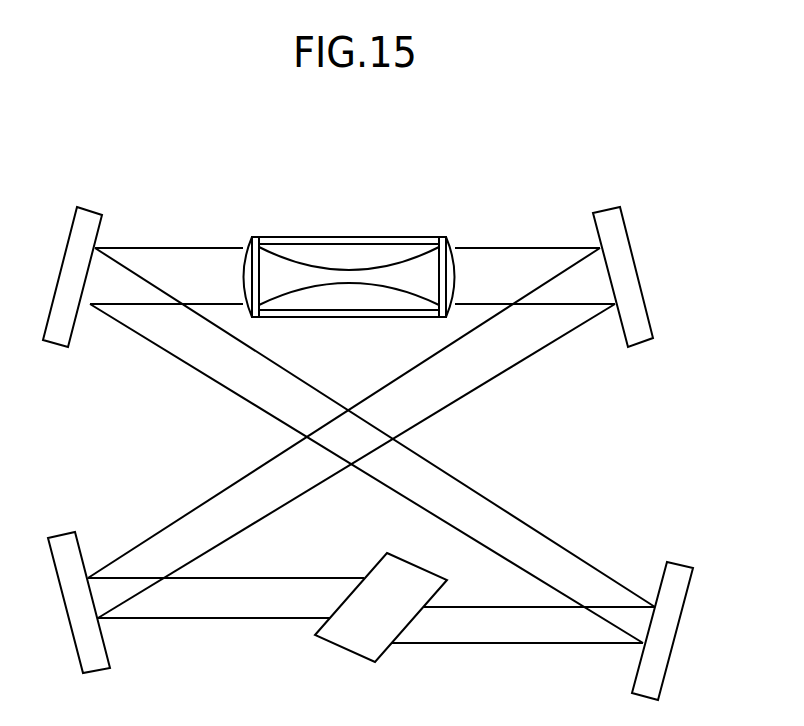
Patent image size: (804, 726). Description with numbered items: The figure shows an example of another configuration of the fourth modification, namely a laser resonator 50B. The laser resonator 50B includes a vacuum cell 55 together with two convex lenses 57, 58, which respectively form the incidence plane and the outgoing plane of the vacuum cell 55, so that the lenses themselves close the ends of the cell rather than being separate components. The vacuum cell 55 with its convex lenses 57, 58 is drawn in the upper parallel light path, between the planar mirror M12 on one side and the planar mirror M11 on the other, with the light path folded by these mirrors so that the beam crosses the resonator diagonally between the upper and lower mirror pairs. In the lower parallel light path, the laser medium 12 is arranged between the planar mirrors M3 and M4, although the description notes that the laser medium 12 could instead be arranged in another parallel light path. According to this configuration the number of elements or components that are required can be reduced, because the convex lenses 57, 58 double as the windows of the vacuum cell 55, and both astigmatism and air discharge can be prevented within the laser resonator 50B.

The laser resonator 50B is at (364, 176).
The vacuum cell 55 is at (347, 242).
The convex lens 57 is at (448, 238).
The convex lens 58 is at (251, 238).
The laser medium 12 is at (380, 556).
The planar mirror M12 is at (52, 346).
The planar mirror M11 is at (643, 346).
The planar mirror M4 is at (61, 532).
The planar mirror M3 is at (677, 562).